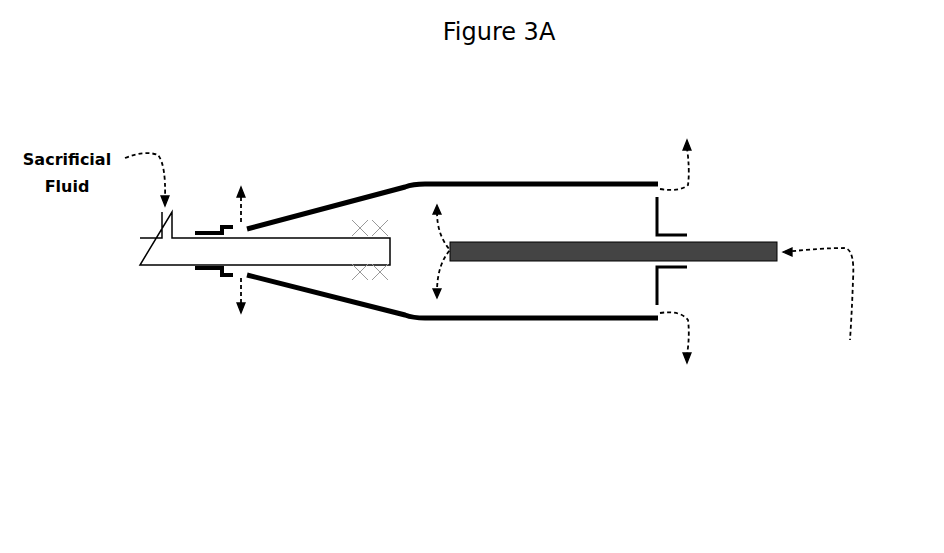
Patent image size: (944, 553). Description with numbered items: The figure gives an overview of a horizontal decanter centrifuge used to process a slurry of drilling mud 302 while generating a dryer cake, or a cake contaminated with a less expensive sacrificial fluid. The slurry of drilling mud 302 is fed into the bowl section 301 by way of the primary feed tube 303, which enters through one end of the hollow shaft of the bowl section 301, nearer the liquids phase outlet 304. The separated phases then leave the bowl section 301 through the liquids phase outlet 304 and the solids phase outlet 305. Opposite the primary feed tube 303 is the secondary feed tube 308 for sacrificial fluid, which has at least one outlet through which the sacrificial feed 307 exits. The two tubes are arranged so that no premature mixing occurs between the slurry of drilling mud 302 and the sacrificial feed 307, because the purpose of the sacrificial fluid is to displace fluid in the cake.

The bowl section 301 is at (550, 293).
The slurry of drilling mud 302 is at (445, 207).
The primary feed tube 303 is at (762, 240).
The liquids phase outlet 304 is at (688, 425).
The solids phase outlet 305 is at (240, 377).
The sacrificial feed 307 is at (393, 283).
The secondary feed tube 308 is at (140, 249).